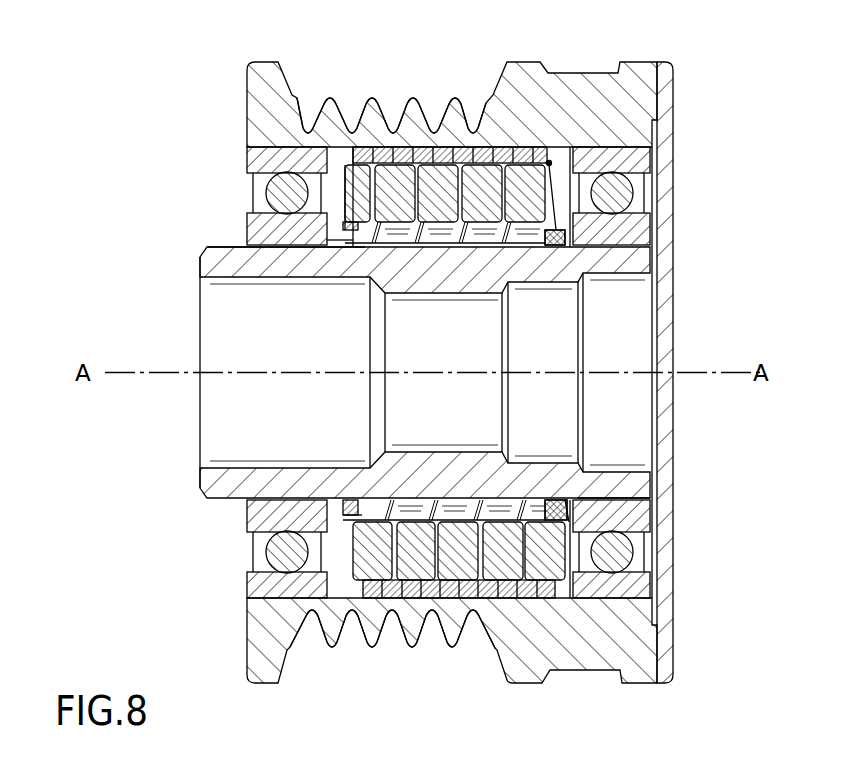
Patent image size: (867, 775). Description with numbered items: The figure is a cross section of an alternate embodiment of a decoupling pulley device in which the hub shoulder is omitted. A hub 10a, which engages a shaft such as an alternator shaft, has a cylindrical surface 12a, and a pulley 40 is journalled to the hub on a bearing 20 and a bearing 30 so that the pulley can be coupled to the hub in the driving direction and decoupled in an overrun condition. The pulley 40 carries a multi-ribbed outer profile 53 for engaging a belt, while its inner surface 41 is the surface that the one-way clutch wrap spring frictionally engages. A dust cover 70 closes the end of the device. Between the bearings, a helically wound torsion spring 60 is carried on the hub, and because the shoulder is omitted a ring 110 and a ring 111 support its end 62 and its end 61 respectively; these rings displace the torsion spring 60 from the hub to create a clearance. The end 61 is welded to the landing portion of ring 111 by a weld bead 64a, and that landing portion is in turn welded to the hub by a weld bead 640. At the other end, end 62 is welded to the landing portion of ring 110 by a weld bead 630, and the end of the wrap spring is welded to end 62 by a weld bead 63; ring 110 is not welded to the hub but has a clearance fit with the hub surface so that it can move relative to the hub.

The hub 10a is at (245, 492).
The surface of hub 12a is at (236, 247).
The bearing 20 is at (249, 163).
The bearing 30 is at (615, 163).
The pulley 40 is at (460, 370).
The inner surface of pulley 41 is at (352, 612).
The pulley outer peripheral portion 53 is at (436, 133).
The torsion spring 60 is at (463, 372).
The end of torsion spring 61 is at (352, 178).
The end of torsion spring 62 is at (542, 560).
The weld bead 63 is at (549, 163).
The weld bead 630 is at (570, 513).
The weld bead 64a is at (341, 225).
The weld bead 640 is at (345, 500).
The dust cover 70 is at (673, 272).
The ring 110 is at (577, 496).
The ring 111 is at (352, 232).